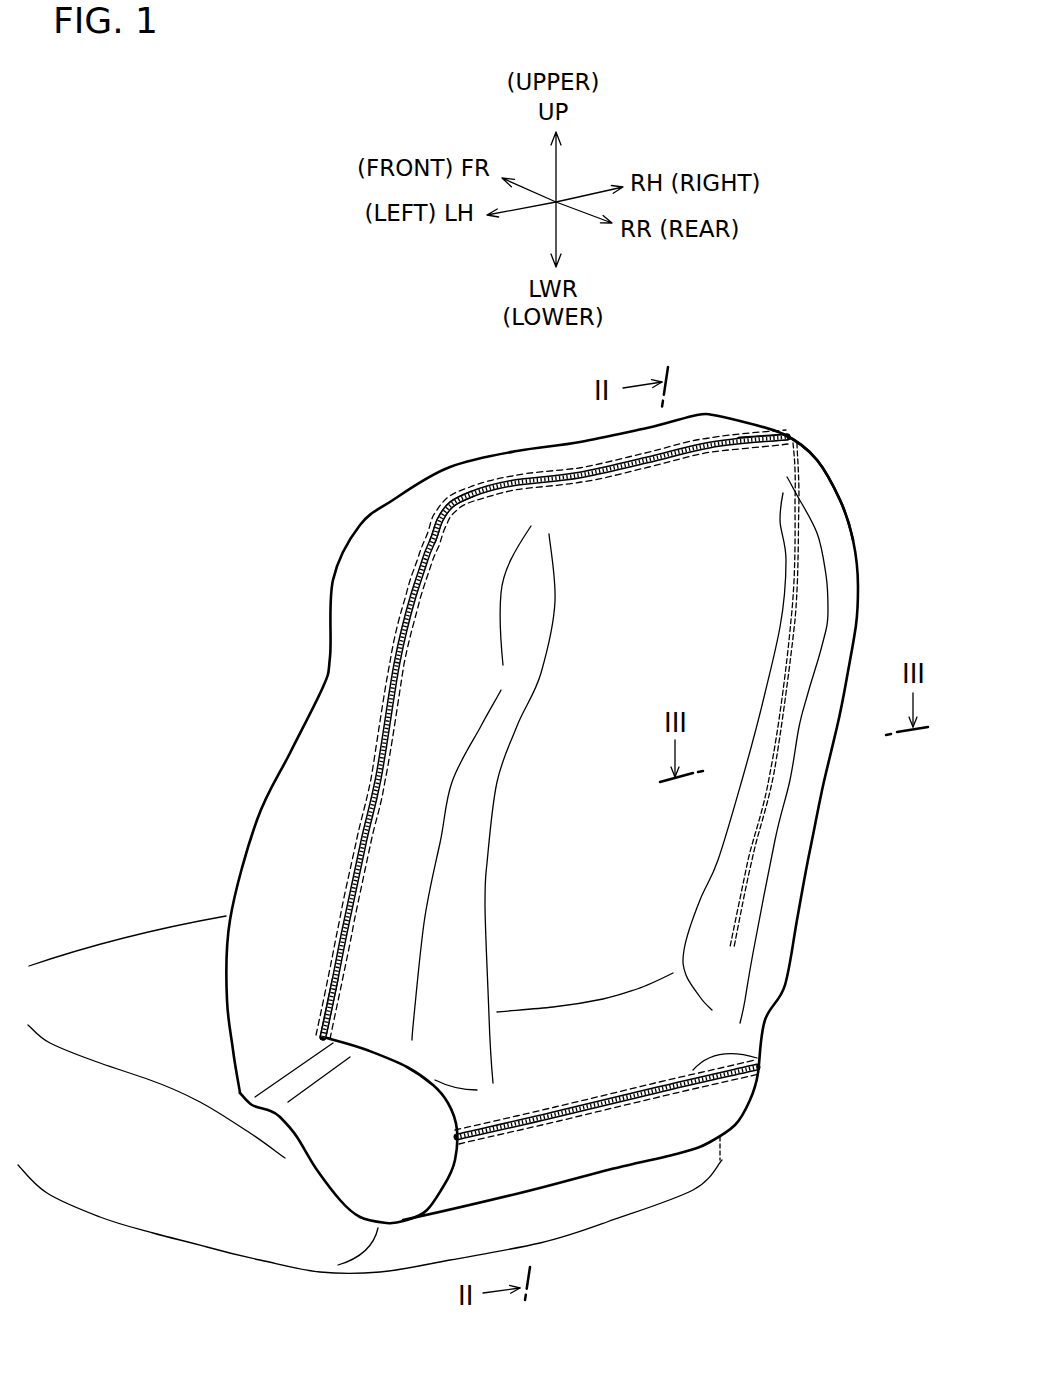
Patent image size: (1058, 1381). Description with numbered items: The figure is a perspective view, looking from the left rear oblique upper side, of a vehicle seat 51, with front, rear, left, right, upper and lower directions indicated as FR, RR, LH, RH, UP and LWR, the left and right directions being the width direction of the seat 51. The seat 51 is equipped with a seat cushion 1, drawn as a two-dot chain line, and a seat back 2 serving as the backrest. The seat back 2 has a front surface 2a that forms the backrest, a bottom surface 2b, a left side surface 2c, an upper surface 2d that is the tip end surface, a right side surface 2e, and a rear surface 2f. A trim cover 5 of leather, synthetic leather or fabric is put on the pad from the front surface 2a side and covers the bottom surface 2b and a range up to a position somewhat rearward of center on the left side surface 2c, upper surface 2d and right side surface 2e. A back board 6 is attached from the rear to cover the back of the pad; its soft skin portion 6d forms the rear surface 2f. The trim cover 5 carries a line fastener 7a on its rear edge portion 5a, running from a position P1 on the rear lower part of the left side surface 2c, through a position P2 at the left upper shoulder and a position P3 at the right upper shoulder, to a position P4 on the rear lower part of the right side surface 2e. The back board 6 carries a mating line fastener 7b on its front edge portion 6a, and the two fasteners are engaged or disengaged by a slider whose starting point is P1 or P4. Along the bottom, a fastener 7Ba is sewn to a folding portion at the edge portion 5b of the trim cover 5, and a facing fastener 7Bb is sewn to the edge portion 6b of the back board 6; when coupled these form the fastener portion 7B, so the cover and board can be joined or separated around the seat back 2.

The seat cushion 1 is at (135, 952).
The seat back 2 is at (825, 433).
The front surface 2a is at (290, 642).
The bottom surface 2b is at (594, 1182).
The left side surface 2c is at (327, 773).
The upper surface 2d is at (518, 442).
The right side surface 2e is at (825, 780).
The rear surface 2f is at (665, 838).
The trim cover 5 is at (405, 523).
The edge portion 5a is at (373, 738).
The edge portion 5b is at (621, 1112).
The back board 6 is at (847, 600).
The edge portion 6a is at (387, 742).
The edge portion 6b is at (657, 1050).
The skin portion 6d is at (748, 537).
The line fastener 7a is at (413, 597).
The line fastener 7b is at (428, 598).
The fastener portion 7B is at (563, 1122).
The fastener 7Ba is at (657, 1097).
The fastener 7Bb is at (757, 1062).
The seat 51 is at (802, 332).
The position P1 is at (323, 1037).
The position P2 is at (458, 497).
The position P3 is at (788, 427).
The position P4 is at (737, 950).